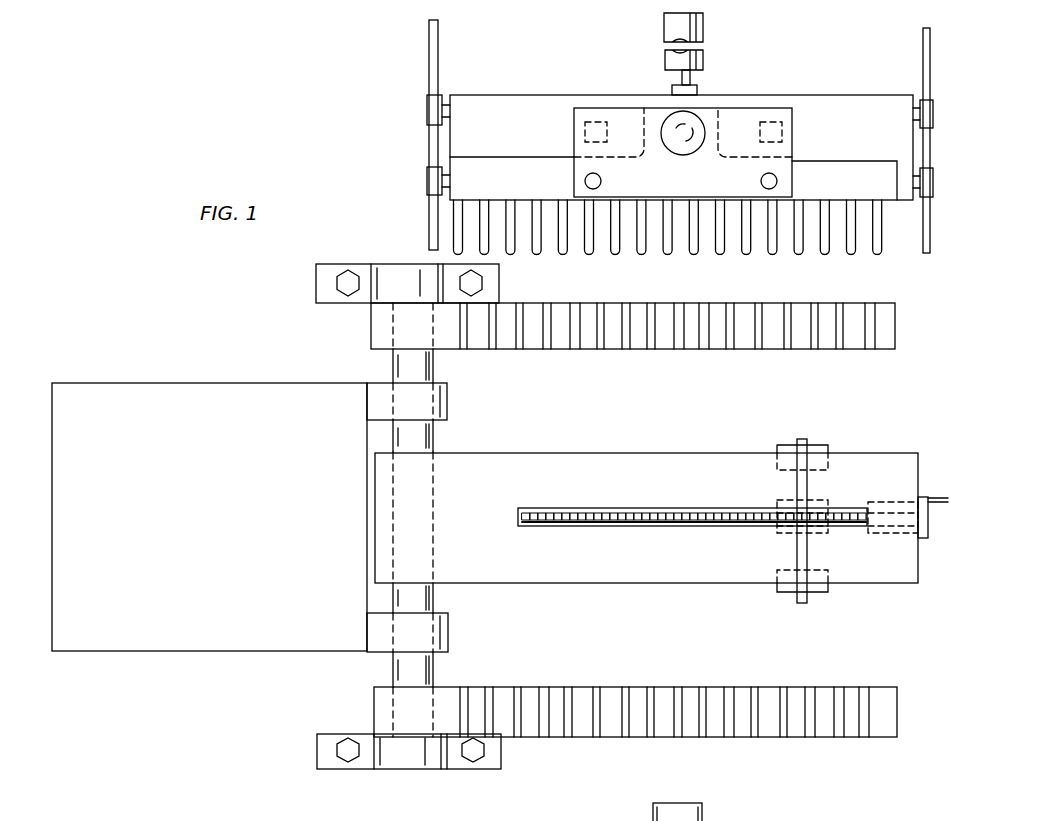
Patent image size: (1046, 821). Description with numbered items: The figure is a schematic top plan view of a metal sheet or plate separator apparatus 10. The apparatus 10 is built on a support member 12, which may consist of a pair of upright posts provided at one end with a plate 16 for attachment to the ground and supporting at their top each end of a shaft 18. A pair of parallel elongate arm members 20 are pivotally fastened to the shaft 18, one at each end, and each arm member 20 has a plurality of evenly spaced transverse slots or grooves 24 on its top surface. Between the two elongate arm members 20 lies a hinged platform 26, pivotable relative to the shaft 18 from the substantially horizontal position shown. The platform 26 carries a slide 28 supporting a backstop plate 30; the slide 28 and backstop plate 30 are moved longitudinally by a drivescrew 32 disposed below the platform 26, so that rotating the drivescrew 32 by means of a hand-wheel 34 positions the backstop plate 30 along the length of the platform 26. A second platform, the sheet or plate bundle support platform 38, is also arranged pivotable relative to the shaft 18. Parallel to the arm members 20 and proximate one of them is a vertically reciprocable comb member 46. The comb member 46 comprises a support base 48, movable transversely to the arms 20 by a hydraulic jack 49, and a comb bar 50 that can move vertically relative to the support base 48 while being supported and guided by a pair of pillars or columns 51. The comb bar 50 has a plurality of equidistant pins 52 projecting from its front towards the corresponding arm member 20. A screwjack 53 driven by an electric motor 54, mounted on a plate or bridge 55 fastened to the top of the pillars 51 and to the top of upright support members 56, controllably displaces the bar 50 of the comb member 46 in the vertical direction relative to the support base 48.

The metal sheet or plate separator apparatus 10 is at (290, 714).
The support member 12 is at (426, 769).
The plate 16 is at (322, 289).
The shaft 18 is at (435, 672).
The elongate arm member 20 is at (684, 352).
The transverse slots or grooves 24 is at (684, 315).
The hinged platform 26 is at (606, 583).
The slide 28 is at (822, 445).
The backstop plate 30 is at (796, 550).
The drivescrew 32 is at (704, 510).
The hand-wheel 34 is at (928, 532).
The sheet or plate bundle support platform 38 is at (206, 397).
The comb member 46 is at (889, 222).
The support base 48 is at (873, 108).
The hydraulic jack 49 is at (706, 36).
The comb bar 50 is at (856, 176).
The pillars or columns 51 is at (585, 181).
The pins 52 is at (810, 256).
The screwjack 53 is at (686, 150).
The electric motor 54 is at (695, 144).
The plate or bridge 55 is at (790, 150).
The upright support members 56 is at (596, 122).